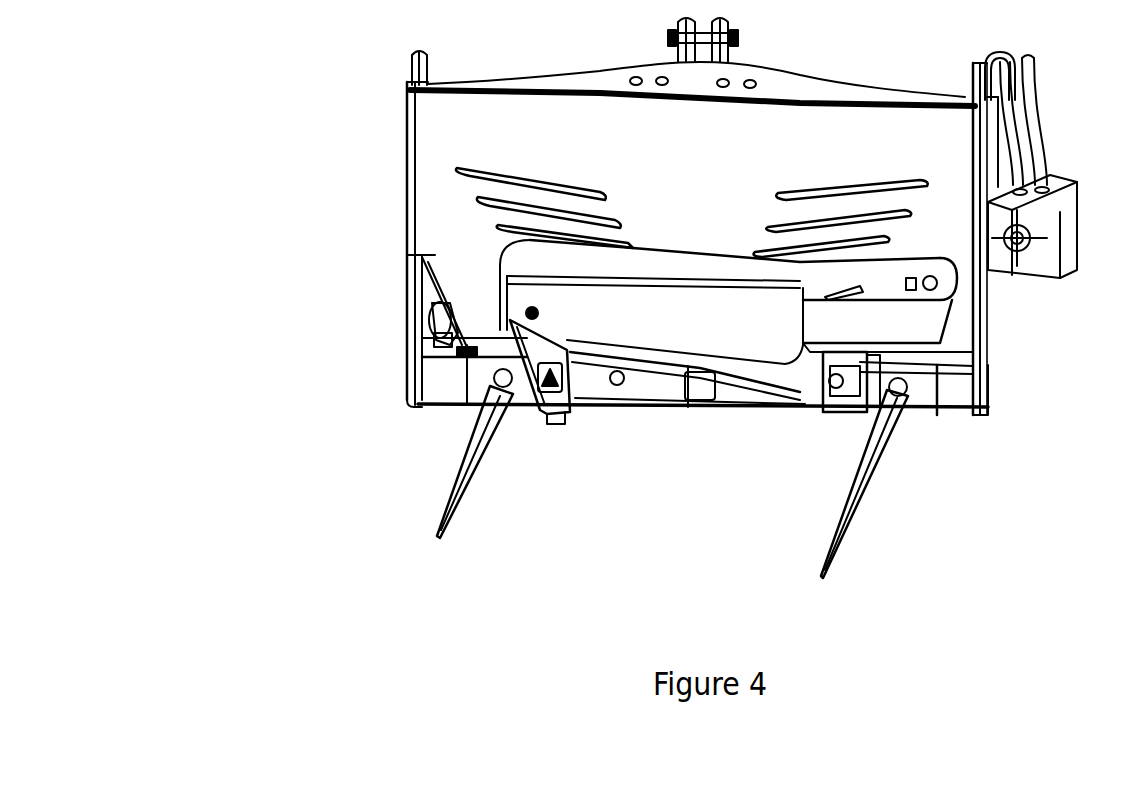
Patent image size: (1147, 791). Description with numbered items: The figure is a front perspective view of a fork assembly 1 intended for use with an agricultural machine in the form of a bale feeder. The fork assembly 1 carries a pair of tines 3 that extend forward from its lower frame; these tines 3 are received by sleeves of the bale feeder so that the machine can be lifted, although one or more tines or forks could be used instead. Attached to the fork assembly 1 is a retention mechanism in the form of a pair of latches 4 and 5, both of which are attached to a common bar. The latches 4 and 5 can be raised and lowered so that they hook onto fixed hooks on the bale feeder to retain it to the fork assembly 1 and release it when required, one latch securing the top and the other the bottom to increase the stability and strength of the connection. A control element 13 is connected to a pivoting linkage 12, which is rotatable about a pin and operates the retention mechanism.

The fork assembly 1 is at (312, 152).
The tines 3 is at (453, 495).
The latch 4 is at (1000, 68).
The latch 5 is at (443, 308).
The pivoting linkage 12 is at (648, 382).
The control element 13 is at (550, 397).